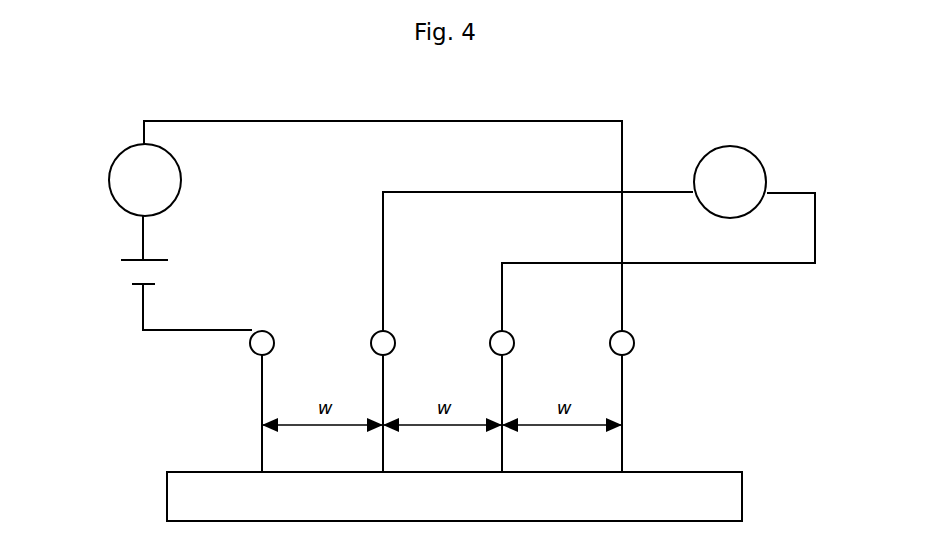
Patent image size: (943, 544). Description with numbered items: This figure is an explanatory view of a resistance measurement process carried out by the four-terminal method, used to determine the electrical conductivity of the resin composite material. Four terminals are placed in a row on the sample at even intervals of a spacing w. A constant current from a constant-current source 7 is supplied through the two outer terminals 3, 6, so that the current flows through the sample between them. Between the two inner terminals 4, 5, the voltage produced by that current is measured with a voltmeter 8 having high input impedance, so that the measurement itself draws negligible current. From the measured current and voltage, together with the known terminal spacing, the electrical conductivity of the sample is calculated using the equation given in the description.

The outer terminal 3 is at (270, 342).
The inner terminal 4 is at (391, 342).
The inner terminal 5 is at (509, 342).
The outer terminal 6 is at (628, 342).
The constant-current source 7 is at (131, 156).
The voltmeter 8 is at (742, 158).